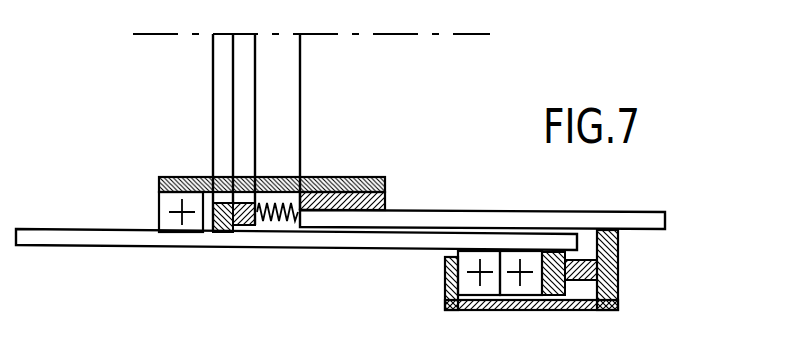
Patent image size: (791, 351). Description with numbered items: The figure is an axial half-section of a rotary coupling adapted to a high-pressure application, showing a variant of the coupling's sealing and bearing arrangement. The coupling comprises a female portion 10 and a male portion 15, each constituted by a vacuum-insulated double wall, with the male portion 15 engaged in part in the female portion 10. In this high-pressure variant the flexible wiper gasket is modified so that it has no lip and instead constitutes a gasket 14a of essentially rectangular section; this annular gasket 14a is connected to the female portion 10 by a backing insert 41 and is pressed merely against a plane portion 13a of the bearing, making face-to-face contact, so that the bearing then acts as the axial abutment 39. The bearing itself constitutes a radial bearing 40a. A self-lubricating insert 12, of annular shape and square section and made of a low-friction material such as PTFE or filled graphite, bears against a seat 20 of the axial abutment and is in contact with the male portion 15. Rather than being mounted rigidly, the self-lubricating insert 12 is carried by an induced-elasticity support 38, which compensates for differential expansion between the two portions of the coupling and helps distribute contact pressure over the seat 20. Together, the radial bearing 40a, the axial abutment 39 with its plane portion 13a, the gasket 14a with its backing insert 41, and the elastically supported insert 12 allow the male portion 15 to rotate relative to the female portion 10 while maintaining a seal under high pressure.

The female portion 10 is at (97, 238).
The self-lubricating insert 12 is at (243, 128).
The plane portion of the bearing 13a is at (618, 238).
The gasket 14a is at (618, 282).
The male portion 15 is at (468, 222).
The seat 20 is at (227, 233).
The induced-elasticity support 38 is at (283, 127).
The axial abutment 39 is at (467, 281).
The radial bearing 40a is at (167, 203).
The backing insert 41 is at (553, 251).